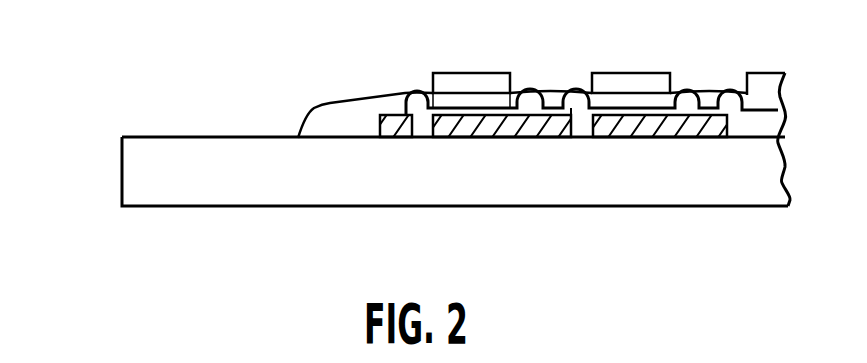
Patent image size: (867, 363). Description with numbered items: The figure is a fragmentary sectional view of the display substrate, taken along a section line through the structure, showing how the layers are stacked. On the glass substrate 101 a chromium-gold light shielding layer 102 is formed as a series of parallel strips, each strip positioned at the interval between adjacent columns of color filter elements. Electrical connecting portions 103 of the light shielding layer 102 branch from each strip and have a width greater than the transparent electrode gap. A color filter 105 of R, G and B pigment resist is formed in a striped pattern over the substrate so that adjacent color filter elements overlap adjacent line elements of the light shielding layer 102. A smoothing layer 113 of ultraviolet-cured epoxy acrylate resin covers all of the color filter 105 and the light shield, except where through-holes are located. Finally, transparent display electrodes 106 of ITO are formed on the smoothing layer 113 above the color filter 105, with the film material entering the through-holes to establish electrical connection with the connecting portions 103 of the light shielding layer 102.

The glass substrate 101 is at (135, 166).
The light shielding layer 102 is at (393, 137).
The connecting portion 103 is at (475, 137).
The color filter 105 is at (492, 107).
The transparent display electrode 106 is at (441, 82).
The smoothing layer 113 is at (334, 110).